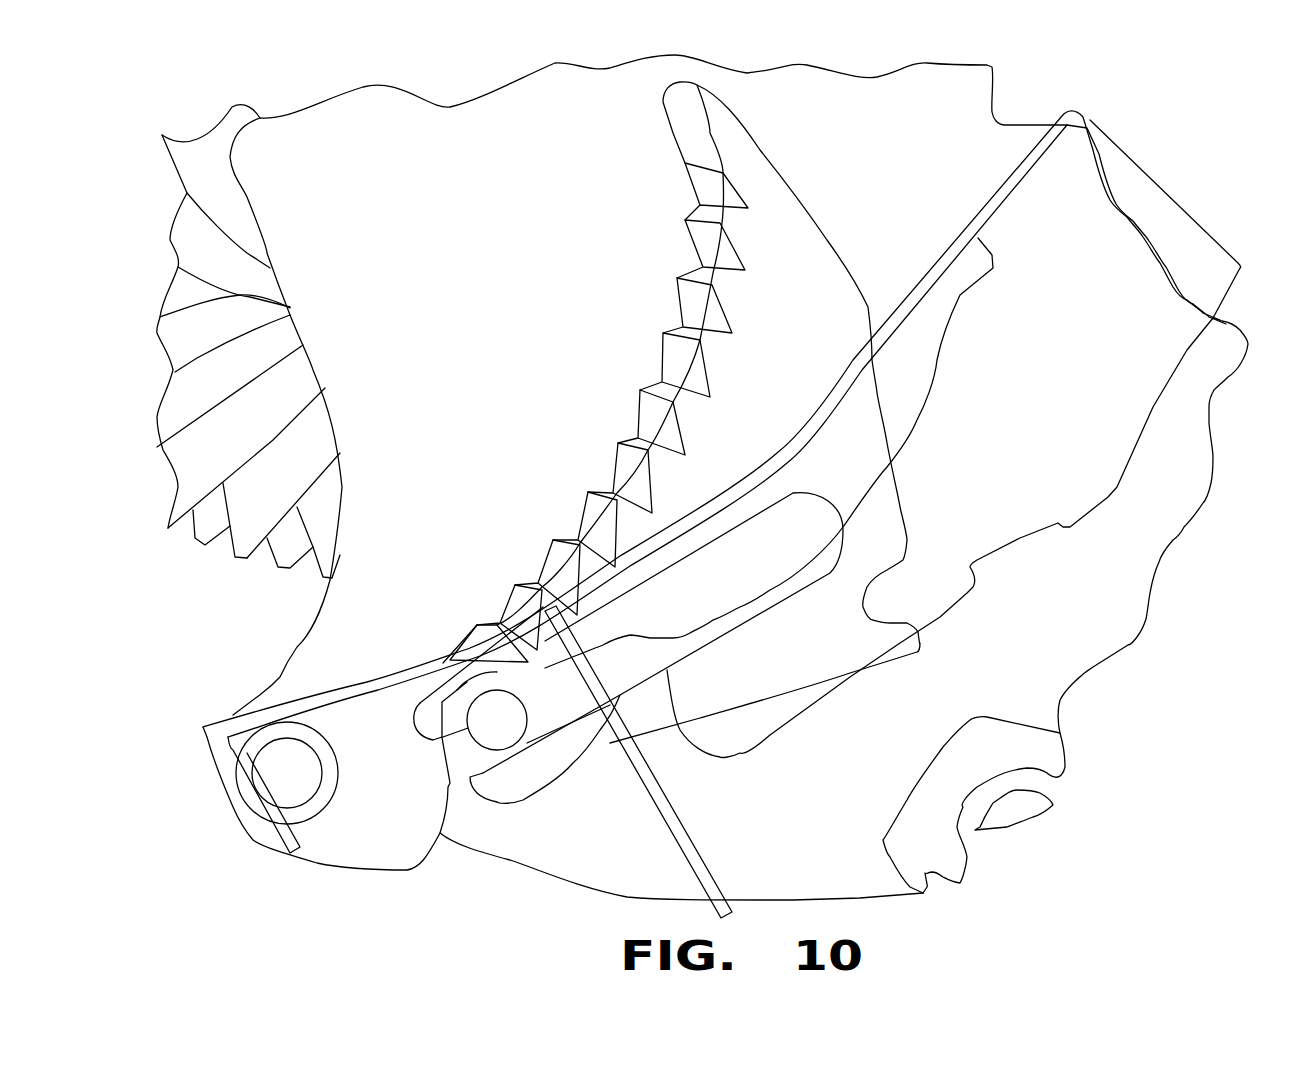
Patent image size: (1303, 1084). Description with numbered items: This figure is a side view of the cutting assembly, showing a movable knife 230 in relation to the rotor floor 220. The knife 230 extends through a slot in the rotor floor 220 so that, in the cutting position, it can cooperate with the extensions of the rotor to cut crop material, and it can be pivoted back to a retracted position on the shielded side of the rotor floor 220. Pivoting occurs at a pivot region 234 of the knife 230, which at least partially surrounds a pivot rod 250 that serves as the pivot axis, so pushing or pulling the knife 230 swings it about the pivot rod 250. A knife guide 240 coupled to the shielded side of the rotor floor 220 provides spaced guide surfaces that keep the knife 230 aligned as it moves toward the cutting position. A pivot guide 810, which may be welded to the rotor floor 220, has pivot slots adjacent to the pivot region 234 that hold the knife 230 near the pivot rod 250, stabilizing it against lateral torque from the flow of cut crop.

The rotor floor 220 is at (310, 707).
The knife 230 is at (800, 265).
The pivot region 234 is at (447, 660).
The knife guide 240 is at (903, 447).
The pivot rod 250 is at (503, 728).
The pivot guide 810 is at (663, 808).